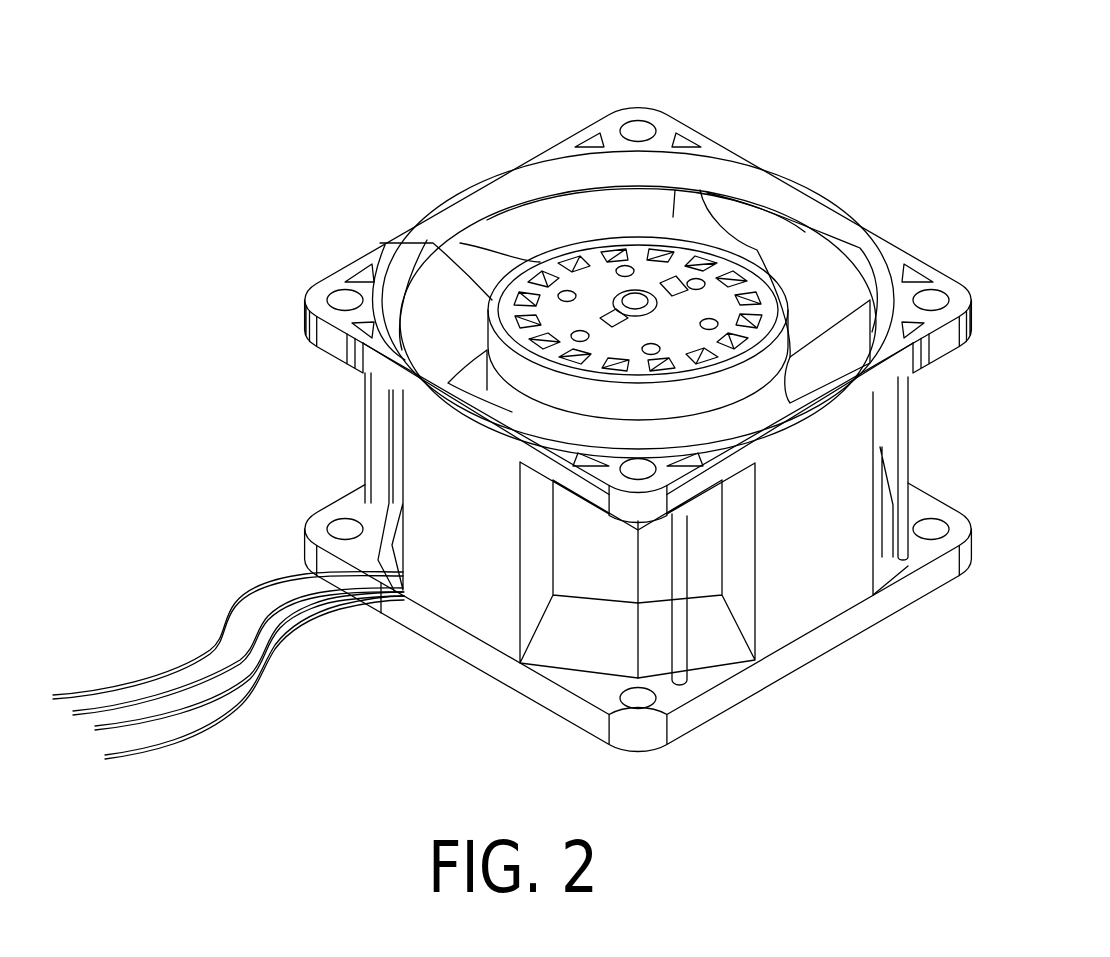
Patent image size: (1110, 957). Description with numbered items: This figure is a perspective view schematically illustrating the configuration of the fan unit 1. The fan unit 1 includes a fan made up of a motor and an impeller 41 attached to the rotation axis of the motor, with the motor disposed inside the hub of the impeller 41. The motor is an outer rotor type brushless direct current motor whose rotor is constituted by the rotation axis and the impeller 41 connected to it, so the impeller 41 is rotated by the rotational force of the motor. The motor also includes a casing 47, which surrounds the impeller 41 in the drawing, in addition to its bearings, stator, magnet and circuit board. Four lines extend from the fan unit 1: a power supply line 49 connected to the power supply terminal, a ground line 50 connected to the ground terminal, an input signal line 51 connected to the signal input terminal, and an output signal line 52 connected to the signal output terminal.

The fan unit 1 is at (294, 208).
The casing 47 is at (558, 150).
The impeller 41 is at (760, 253).
The power supply line 49 is at (73, 693).
The ground line 50 is at (120, 707).
The input signal line 51 is at (153, 722).
The output signal line 52 is at (190, 748).